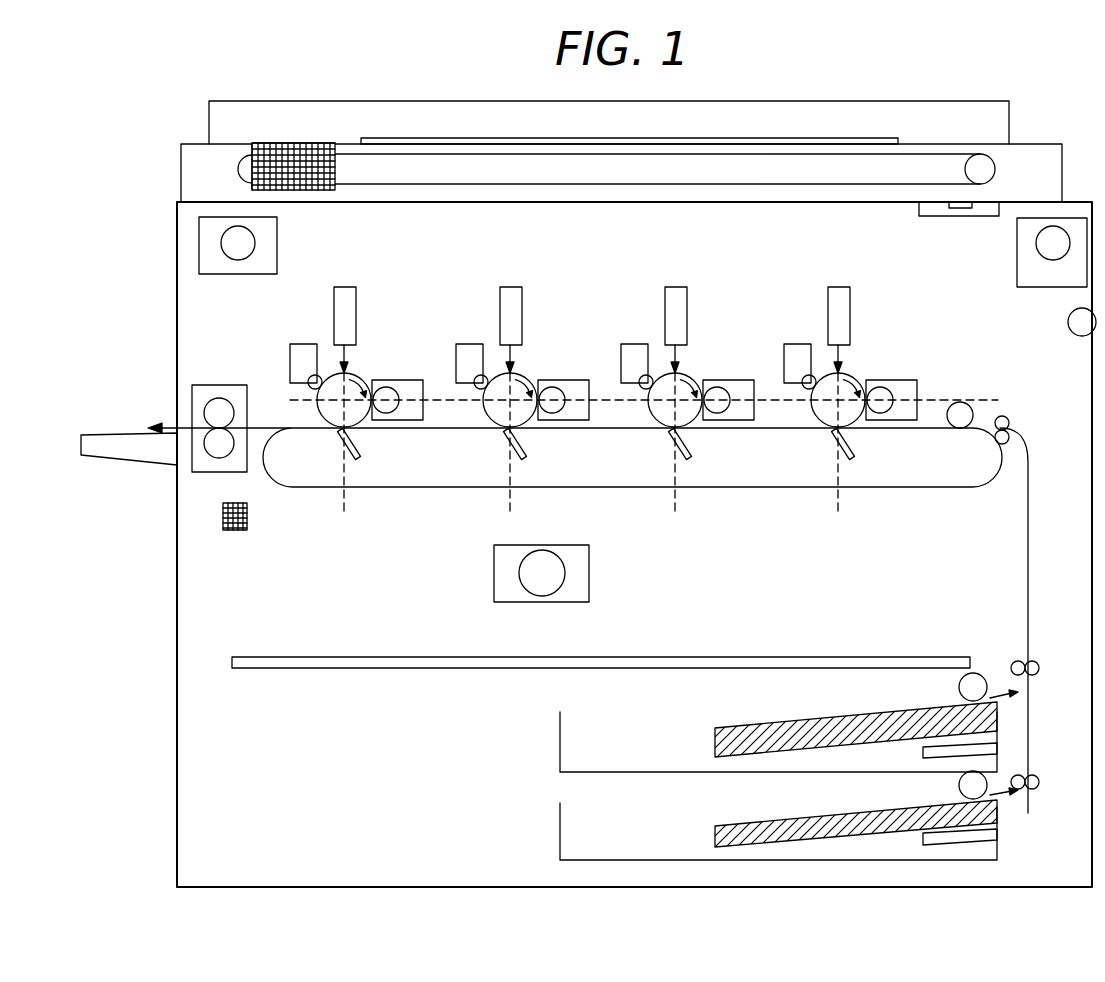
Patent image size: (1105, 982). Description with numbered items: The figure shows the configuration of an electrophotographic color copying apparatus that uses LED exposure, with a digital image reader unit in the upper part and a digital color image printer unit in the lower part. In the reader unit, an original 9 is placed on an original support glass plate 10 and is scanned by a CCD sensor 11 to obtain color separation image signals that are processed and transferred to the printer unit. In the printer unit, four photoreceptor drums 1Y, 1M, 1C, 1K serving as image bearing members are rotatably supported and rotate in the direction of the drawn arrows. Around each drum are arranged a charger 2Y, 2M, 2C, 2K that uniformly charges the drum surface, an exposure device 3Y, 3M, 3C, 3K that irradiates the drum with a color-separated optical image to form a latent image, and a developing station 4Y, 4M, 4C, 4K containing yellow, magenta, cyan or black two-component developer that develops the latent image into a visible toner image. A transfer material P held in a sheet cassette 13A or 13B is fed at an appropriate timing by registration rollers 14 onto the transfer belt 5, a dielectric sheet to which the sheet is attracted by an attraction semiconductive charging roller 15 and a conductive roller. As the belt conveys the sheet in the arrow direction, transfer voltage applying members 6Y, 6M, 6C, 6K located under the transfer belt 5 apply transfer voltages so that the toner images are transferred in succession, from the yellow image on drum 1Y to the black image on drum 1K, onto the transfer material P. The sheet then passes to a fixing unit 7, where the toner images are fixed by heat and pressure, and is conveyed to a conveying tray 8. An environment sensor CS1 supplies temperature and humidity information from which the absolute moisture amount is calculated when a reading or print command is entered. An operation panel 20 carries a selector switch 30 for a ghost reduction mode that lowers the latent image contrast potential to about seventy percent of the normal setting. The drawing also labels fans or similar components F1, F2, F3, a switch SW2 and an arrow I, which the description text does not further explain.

The photoreceptor drum 1K is at (364, 378).
The photoreceptor drum 1C is at (530, 378).
The photoreceptor drum 1M is at (695, 378).
The photoreceptor drum 1Y is at (858, 378).
The charger 2K is at (302, 344).
The charger 2C is at (468, 344).
The charger 2M is at (633, 344).
The charger 2Y is at (796, 344).
The exposure device 3K is at (346, 286).
The exposure device 3C is at (512, 286).
The exposure device 3M is at (677, 286).
The exposure device 3Y is at (840, 286).
The developing station 4K is at (404, 380).
The developing station 4C is at (570, 380).
The developing station 4M is at (735, 380).
The developing station 4Y is at (898, 380).
The transfer voltage applying member 6K is at (362, 455).
The transfer voltage applying member 6C is at (528, 455).
The transfer voltage applying member 6M is at (693, 455).
The transfer voltage applying member 6Y is at (856, 455).
The transfer belt 5 is at (930, 489).
The fixing unit 7 is at (222, 385).
The conveying tray 8 is at (97, 433).
The original 9 is at (900, 139).
The original support glass plate 10 is at (990, 156).
The CCD sensor 11 is at (252, 150).
The sheet cassette 13A is at (985, 672).
The sheet cassette 13B is at (998, 757).
The registration rollers 14 is at (1010, 420).
The attraction semiconductive charging roller 15 is at (966, 402).
The operation panel 20 is at (931, 217).
The selector switch 30 is at (966, 210).
The fan F1 is at (1017, 272).
The fan F2 is at (590, 565).
The fan F3 is at (217, 275).
The switch SW2 is at (235, 531).
The environment sensor CS1 is at (1080, 336).
The transfer material P is at (760, 727).
The sheet discharge direction I is at (213, 419).